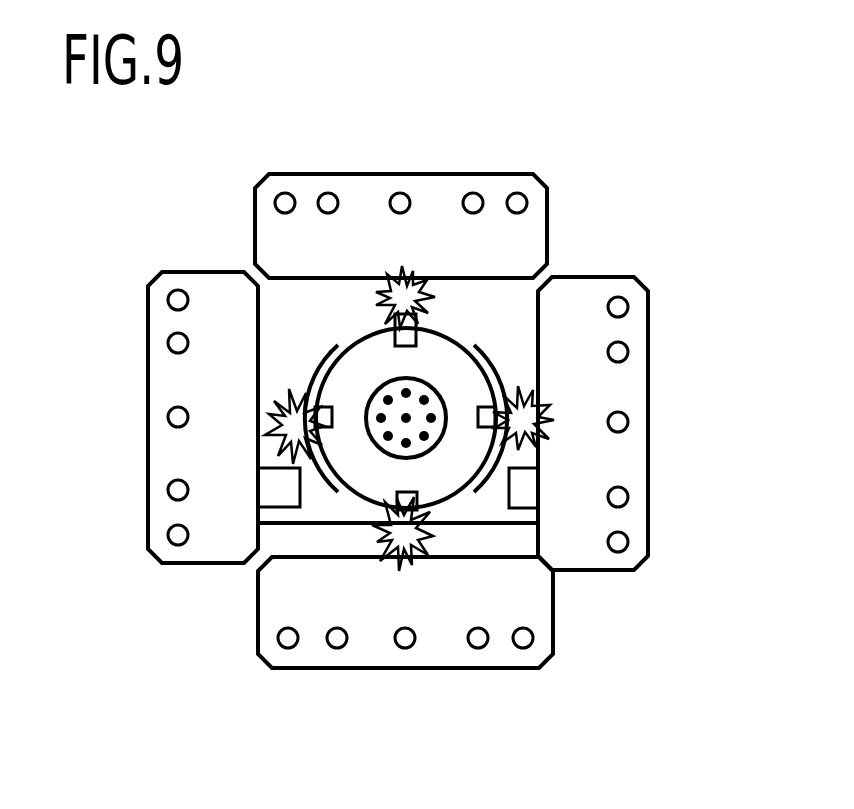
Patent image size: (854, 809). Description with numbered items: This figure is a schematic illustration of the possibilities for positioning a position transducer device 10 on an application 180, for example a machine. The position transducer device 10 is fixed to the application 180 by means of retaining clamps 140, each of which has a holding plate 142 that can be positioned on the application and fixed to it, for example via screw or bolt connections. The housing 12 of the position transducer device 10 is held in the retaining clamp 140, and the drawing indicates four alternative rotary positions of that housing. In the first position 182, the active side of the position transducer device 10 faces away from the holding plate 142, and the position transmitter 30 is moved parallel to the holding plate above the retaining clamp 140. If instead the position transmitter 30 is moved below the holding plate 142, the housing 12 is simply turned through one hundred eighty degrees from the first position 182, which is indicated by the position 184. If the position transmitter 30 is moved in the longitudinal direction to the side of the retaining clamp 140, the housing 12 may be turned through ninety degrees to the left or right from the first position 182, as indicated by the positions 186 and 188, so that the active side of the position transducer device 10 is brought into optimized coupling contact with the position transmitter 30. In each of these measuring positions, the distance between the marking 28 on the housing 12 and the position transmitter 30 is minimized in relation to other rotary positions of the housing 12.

The position transducer device 10 is at (447, 367).
The housing 12 is at (440, 500).
The marking 28 is at (432, 300).
The position transmitter 30 is at (437, 200).
The retaining clamp 140 is at (484, 347).
The holding plate 142 is at (448, 512).
The application 180 is at (296, 524).
The first position 182 is at (360, 324).
The position 184 is at (392, 527).
The position 186 is at (305, 466).
The position 188 is at (535, 421).